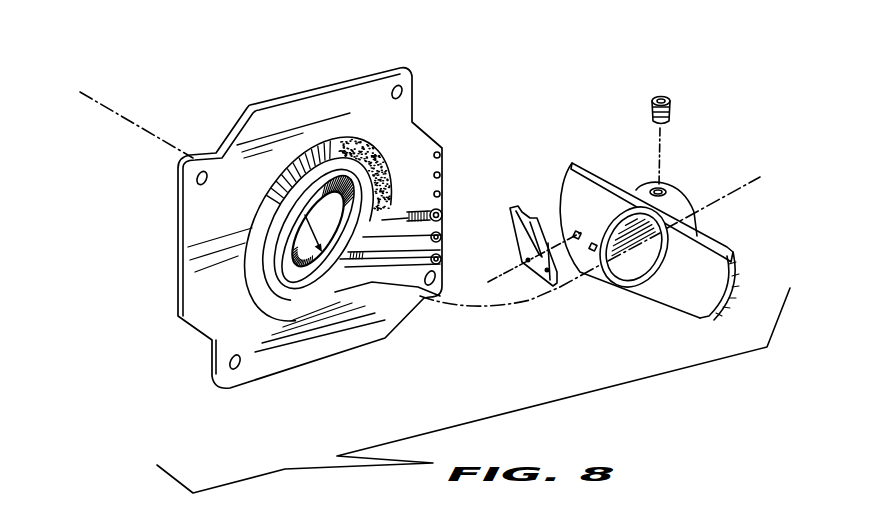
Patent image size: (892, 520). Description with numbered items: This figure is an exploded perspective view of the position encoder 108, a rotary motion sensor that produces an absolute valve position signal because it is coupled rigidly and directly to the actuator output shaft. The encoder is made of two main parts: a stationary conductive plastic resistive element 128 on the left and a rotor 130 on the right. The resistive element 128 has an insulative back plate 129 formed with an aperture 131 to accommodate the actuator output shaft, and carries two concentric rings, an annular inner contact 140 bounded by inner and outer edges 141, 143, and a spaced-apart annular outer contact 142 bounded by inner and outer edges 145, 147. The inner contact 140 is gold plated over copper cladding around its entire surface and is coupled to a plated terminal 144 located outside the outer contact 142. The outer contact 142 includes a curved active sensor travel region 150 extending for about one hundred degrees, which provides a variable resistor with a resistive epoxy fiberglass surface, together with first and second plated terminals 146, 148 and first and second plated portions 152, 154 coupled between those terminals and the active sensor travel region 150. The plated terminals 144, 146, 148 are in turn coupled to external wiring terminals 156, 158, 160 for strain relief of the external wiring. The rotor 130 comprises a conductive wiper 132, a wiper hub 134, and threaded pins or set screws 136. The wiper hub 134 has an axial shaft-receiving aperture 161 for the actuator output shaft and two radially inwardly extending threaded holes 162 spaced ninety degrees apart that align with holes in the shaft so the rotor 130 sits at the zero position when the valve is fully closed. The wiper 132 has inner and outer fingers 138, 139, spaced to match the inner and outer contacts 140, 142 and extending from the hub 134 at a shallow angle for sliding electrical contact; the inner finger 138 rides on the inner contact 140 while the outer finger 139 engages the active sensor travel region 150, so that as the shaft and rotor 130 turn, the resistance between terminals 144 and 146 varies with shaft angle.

The position encoder 108 is at (328, 201).
The resistive element 128 is at (258, 94).
The back plate 129 is at (197, 295).
The rotor 130 is at (649, 178).
The aperture 131 is at (352, 305).
The conductive wiper 132 is at (556, 252).
The wiper hub 134 is at (605, 178).
The set screws 136 is at (670, 100).
The inner finger 138 is at (566, 165).
The outer finger 139 is at (513, 209).
The annular inner contact 140 is at (268, 243).
The inner edge 141 is at (270, 262).
The annular outer contact 142 is at (330, 147).
The outer edge 143 is at (290, 322).
The plated terminal 144 is at (441, 237).
The inner edge 145 is at (306, 320).
The first plated terminal 146 is at (442, 215).
The outer edge 147 is at (330, 315).
The second plated terminal 148 is at (441, 259).
The active sensor travel region 150 is at (363, 145).
The first plated portion 152 is at (382, 220).
The second plated portion 154 is at (255, 220).
The external wiring terminal 156 is at (443, 195).
The external wiring terminal 158 is at (443, 173).
The external wiring terminal 160 is at (443, 153).
The shaft-receiving aperture 161 is at (636, 262).
The threaded holes 162 is at (676, 175).